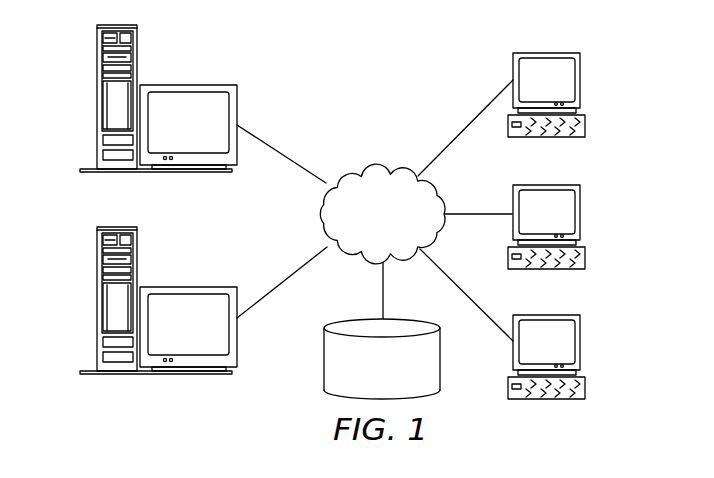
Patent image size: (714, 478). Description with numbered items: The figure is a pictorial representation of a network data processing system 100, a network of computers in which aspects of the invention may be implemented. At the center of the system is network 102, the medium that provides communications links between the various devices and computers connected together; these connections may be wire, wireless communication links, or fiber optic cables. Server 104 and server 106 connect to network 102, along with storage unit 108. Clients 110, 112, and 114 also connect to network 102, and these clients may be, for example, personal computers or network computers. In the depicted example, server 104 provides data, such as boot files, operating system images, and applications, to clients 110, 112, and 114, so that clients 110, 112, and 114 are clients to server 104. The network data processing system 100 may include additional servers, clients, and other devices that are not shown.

The network data processing system 100 is at (434, 58).
The network 102 is at (355, 168).
The server 104 is at (97, 302).
The server 106 is at (97, 100).
The storage unit 108 is at (322, 368).
The client 110 is at (580, 80).
The client 112 is at (580, 213).
The client 114 is at (580, 340).